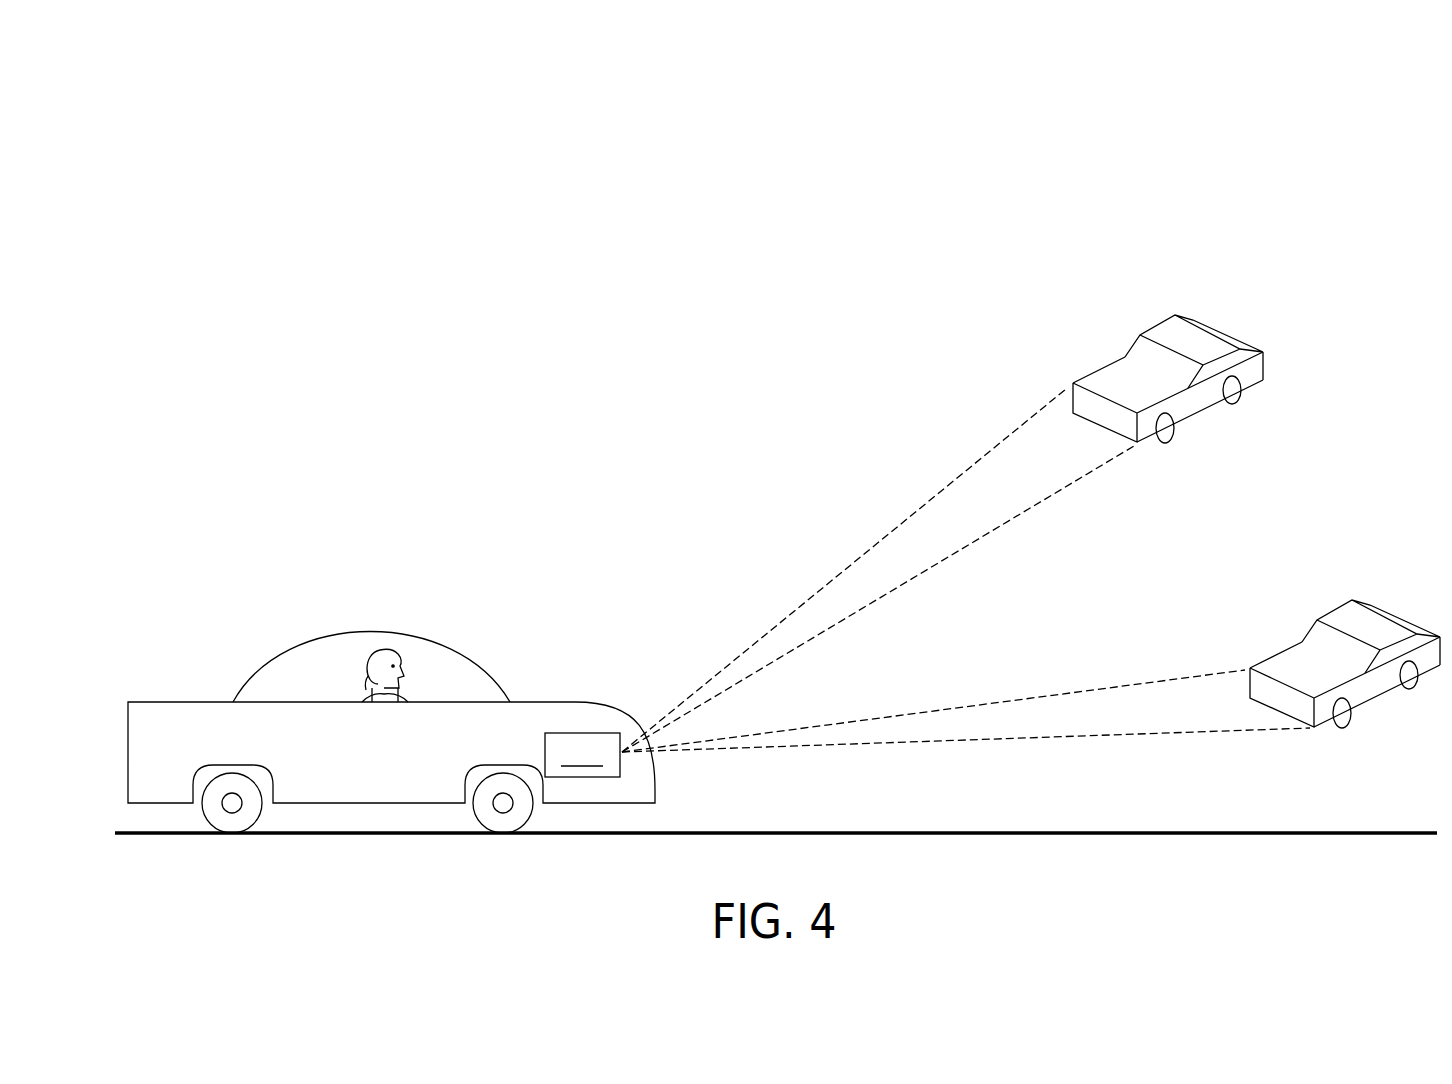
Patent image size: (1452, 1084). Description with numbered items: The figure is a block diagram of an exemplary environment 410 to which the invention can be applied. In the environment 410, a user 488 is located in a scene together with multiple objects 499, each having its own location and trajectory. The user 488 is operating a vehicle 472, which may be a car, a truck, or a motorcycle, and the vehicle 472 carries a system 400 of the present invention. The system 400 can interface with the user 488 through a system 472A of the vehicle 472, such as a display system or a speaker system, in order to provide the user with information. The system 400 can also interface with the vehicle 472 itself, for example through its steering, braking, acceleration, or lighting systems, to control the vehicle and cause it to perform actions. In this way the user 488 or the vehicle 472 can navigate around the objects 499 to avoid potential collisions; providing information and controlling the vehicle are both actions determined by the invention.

The environment 410 is at (237, 97).
The vehicle 472 is at (363, 756).
The system of the vehicle 472A is at (483, 690).
The user 488 is at (352, 668).
The system 400 is at (585, 784).
The objects 499 is at (1150, 310).